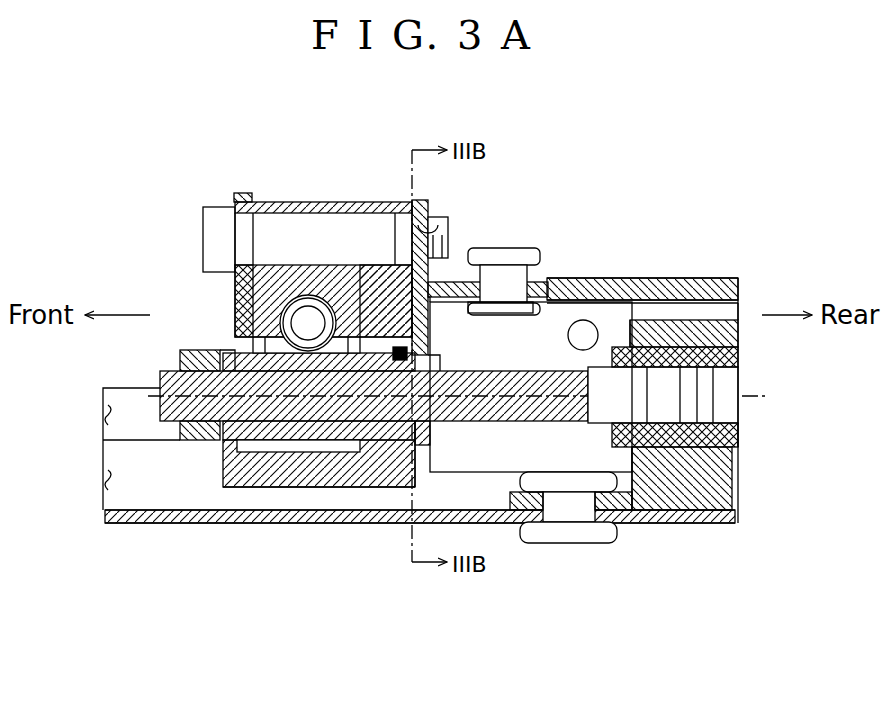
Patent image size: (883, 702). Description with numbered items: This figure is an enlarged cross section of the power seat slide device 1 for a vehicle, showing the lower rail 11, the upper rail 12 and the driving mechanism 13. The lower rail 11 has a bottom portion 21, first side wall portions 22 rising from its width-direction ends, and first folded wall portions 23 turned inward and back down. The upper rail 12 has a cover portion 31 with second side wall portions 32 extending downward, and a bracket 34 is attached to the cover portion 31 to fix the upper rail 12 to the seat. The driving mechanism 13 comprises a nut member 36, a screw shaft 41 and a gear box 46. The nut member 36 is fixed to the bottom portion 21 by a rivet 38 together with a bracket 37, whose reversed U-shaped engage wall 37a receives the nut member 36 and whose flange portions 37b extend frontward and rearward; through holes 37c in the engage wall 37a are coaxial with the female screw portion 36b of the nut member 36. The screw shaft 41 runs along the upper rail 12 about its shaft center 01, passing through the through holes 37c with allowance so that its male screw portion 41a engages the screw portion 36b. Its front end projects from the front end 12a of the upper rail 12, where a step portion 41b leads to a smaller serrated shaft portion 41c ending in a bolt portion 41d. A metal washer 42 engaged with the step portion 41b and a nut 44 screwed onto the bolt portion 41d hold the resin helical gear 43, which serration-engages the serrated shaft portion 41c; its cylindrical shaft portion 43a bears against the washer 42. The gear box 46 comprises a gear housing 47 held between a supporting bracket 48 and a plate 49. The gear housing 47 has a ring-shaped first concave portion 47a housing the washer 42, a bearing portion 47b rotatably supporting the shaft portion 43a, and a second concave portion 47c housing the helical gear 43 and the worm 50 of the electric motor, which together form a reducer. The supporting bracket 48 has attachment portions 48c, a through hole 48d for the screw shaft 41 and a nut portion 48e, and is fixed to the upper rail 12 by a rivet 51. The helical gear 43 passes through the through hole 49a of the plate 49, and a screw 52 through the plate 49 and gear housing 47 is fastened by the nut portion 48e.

The power seat slide device 1 is at (616, 178).
The lower rail 11 is at (178, 530).
The upper rail 12 is at (628, 280).
The front end of the upper rail 12a is at (452, 284).
The driving mechanism 13 is at (168, 242).
The bottom portion 21 is at (258, 524).
The first side wall portion 22 is at (110, 478).
The first folded wall portion 23 is at (110, 410).
The cover portion 31 is at (575, 290).
The second side wall portion 32 is at (480, 474).
The bracket 34 is at (620, 288).
The nut member 36 is at (680, 500).
The screw portion 36b is at (738, 378).
The bracket 37 is at (690, 322).
The engage wall 37a is at (655, 335).
The flange portion 37b is at (625, 506).
The through hole 37c is at (670, 490).
The rivet 38 is at (572, 522).
The screw shaft 41 is at (540, 360).
The screw portion 41a is at (740, 440).
The step portion 41b is at (365, 350).
The serrated shaft portion 41c is at (335, 472).
The bolt portion 41d is at (235, 437).
The washer 42 is at (393, 440).
The helical gear 43 is at (300, 490).
The shaft portion 43a is at (335, 296).
The nut 44 is at (190, 355).
The gear box 46 is at (300, 203).
The gear housing 47 is at (320, 204).
The first concave portion 47a is at (432, 435).
The bearing portion 47b is at (375, 482).
The second concave portion 47c is at (236, 470).
The supporting bracket 48 is at (420, 202).
The attachment portion 48c is at (548, 284).
The through hole 48d is at (438, 362).
The nut portion 48e is at (446, 226).
The plate 49 is at (243, 194).
The through hole 49a is at (232, 350).
The worm 50 is at (292, 300).
The rivet 51 is at (505, 262).
The screw 52 is at (362, 204).
The shaft center 01 is at (478, 384).